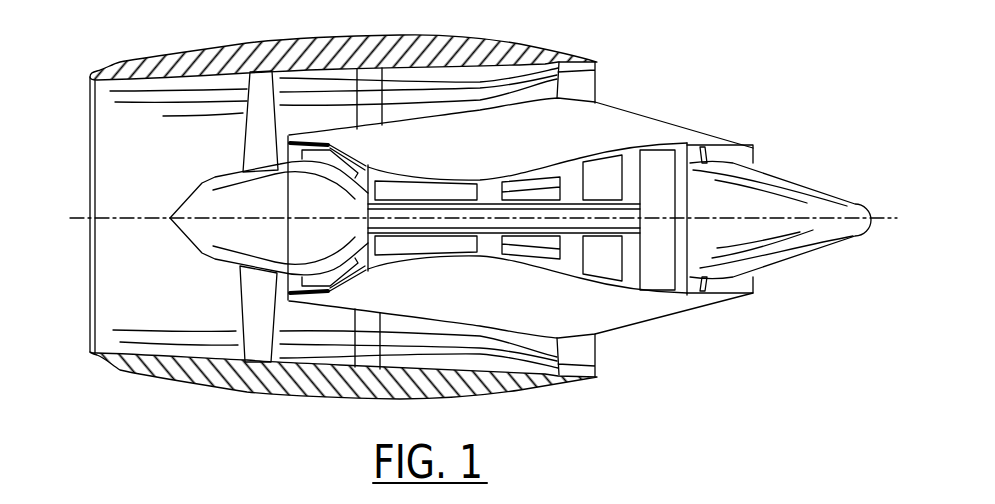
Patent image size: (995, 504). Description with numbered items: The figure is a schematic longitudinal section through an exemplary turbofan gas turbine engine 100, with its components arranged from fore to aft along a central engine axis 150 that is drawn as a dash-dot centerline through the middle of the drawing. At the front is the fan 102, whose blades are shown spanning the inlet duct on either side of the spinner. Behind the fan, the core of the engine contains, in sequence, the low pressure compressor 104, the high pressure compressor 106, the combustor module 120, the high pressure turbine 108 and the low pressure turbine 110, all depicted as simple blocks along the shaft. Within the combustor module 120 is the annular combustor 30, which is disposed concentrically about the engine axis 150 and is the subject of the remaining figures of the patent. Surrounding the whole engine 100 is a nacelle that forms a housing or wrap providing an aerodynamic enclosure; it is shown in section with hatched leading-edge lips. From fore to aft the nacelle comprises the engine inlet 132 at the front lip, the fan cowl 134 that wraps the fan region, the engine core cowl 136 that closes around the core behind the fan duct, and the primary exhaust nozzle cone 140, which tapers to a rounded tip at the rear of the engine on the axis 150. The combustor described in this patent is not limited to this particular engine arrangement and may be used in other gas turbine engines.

The turbofan gas turbine engine 100 is at (690, 65).
The fan 102 is at (246, 128).
The low pressure compressor 104 is at (341, 287).
The high pressure compressor 106 is at (412, 193).
The annular combustor 30 is at (538, 183).
The high pressure turbine 108 is at (605, 173).
The low pressure turbine 110 is at (657, 174).
The combustor module 120 is at (515, 176).
The engine inlet 132 is at (90, 153).
The fan cowl 134 is at (240, 42).
The engine core cowl 136 is at (557, 97).
The primary exhaust nozzle cone 140 is at (830, 192).
The central engine axis 150 is at (126, 219).